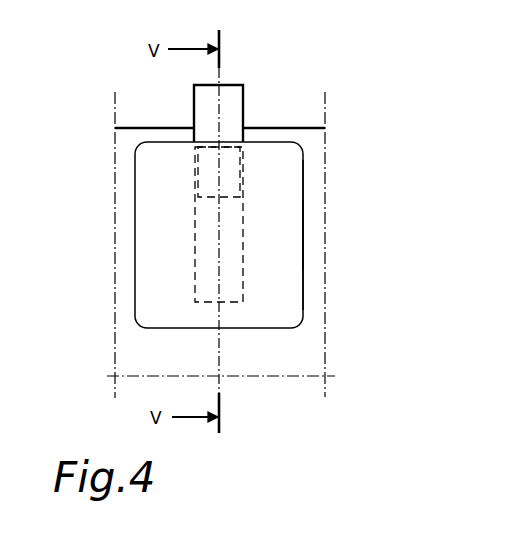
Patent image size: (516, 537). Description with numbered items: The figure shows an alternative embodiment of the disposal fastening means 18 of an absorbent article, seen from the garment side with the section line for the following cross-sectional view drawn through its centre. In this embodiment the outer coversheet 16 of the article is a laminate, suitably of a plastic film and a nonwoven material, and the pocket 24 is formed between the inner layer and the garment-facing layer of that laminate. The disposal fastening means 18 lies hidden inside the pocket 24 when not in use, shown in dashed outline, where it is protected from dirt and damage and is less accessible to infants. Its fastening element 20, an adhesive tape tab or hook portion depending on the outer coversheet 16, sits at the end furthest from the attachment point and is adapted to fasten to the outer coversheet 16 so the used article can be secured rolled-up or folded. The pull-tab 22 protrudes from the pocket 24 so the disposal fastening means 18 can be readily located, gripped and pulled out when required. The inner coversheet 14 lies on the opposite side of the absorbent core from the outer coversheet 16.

The inner coversheet 14 is at (310, 350).
The outer coversheet 16 is at (292, 213).
The disposal fastening means 18 is at (207, 258).
The fastening element 20 is at (190, 160).
The pull-tab 22 is at (232, 108).
The pocket 24 is at (306, 238).